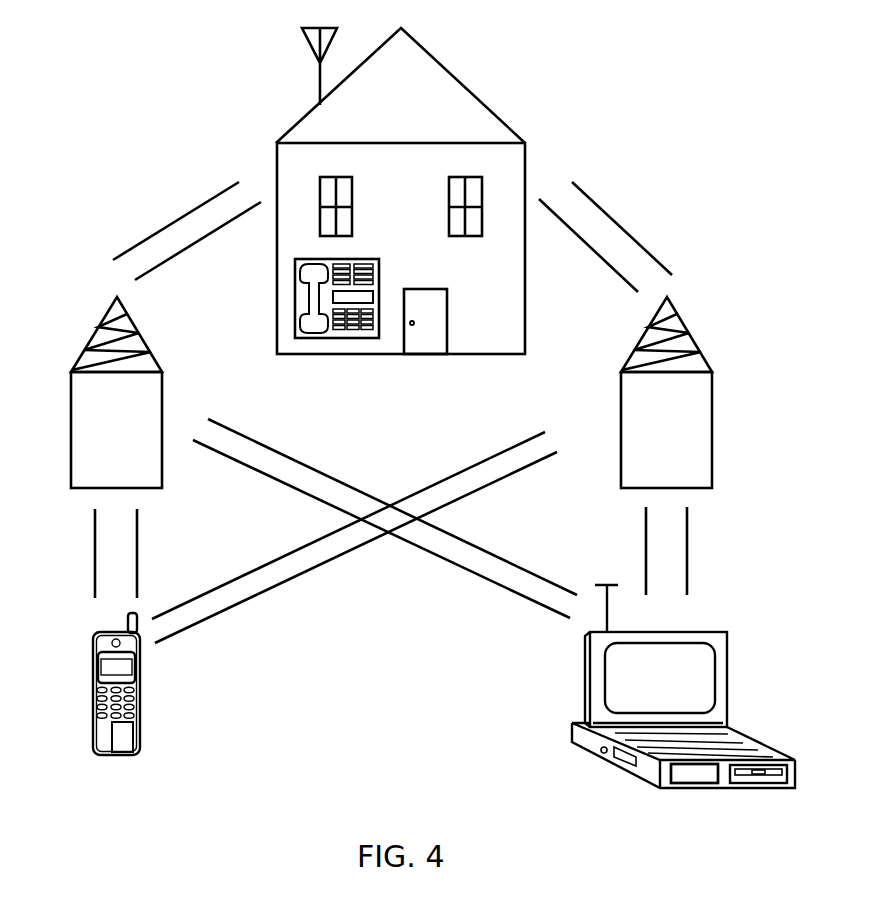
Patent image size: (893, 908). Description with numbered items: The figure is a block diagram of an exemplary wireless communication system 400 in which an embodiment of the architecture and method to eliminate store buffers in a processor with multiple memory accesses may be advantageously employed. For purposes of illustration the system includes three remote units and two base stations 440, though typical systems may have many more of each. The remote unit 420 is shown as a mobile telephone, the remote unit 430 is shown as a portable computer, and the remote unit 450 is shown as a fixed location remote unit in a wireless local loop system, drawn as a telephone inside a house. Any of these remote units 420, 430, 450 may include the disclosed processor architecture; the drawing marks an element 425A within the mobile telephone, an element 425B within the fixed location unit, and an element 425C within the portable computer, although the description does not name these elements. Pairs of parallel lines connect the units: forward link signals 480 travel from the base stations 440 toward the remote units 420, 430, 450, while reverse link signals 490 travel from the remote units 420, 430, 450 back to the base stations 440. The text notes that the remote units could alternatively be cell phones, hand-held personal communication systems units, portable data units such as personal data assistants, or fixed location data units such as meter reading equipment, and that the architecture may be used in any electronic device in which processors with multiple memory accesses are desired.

The wireless communication system 400 is at (127, 62).
The remote unit 420 is at (97, 637).
The device identifier module of mobile telephone 425A is at (124, 743).
The device identifier module of telephone 425B is at (360, 297).
The device identifier module of laptop computer 425C is at (700, 775).
The remote unit 430 is at (708, 632).
The base stations 440 is at (93, 337).
The remote unit 450 is at (295, 306).
The forward link signals 480 is at (180, 218).
The reverse link signals 490 is at (183, 250).